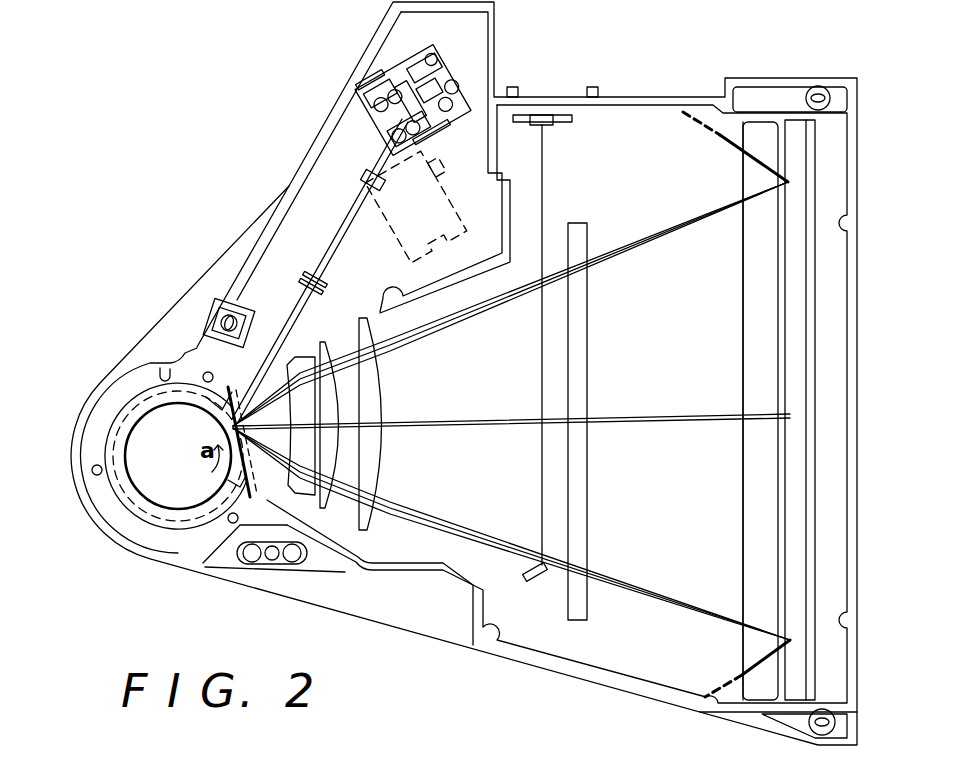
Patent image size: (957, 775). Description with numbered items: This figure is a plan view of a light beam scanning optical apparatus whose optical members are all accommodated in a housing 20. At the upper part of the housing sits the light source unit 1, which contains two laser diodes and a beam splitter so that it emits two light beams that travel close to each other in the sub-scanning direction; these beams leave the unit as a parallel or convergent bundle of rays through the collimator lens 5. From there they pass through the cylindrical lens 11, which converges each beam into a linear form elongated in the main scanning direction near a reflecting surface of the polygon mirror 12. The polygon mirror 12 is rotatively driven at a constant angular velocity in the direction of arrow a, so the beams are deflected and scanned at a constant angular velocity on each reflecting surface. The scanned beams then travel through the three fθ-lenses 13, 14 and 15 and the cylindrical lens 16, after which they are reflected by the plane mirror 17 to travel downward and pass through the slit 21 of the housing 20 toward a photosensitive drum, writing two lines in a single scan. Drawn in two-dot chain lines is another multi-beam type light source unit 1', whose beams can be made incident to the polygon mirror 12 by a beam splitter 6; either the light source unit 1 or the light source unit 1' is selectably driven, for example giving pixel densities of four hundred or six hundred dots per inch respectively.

The light source unit 1 is at (390, 98).
The another multi-beam type light source unit 1' is at (408, 232).
The collimator lens 5 is at (390, 128).
The beam splitter 6 is at (362, 172).
The cylindrical lens 11 is at (307, 282).
The polygon mirror 12 is at (155, 477).
The fθ-lens 13 is at (303, 497).
The fθ-lens 14 is at (327, 497).
The fθ-lens 15 is at (377, 480).
The cylindrical lens 16 is at (568, 600).
The plane mirror 17 is at (790, 478).
The housing 20 is at (647, 123).
The slit 21 is at (762, 296).